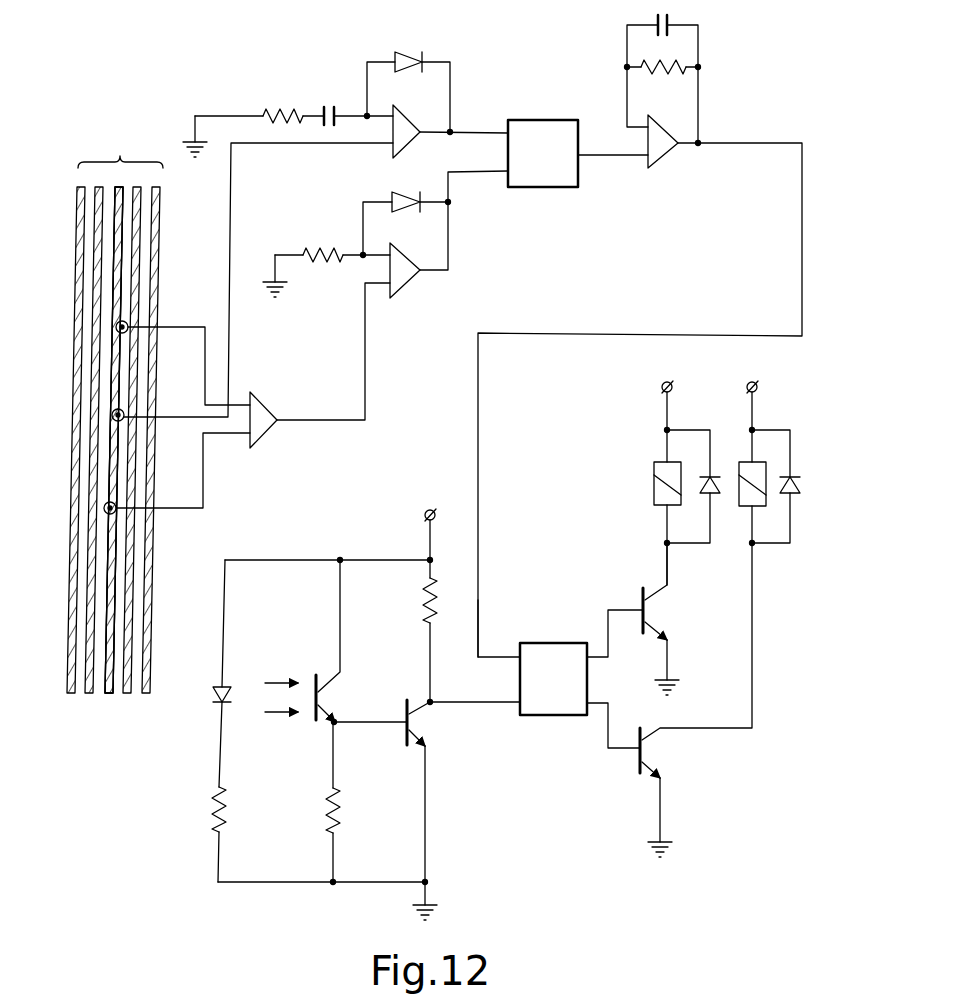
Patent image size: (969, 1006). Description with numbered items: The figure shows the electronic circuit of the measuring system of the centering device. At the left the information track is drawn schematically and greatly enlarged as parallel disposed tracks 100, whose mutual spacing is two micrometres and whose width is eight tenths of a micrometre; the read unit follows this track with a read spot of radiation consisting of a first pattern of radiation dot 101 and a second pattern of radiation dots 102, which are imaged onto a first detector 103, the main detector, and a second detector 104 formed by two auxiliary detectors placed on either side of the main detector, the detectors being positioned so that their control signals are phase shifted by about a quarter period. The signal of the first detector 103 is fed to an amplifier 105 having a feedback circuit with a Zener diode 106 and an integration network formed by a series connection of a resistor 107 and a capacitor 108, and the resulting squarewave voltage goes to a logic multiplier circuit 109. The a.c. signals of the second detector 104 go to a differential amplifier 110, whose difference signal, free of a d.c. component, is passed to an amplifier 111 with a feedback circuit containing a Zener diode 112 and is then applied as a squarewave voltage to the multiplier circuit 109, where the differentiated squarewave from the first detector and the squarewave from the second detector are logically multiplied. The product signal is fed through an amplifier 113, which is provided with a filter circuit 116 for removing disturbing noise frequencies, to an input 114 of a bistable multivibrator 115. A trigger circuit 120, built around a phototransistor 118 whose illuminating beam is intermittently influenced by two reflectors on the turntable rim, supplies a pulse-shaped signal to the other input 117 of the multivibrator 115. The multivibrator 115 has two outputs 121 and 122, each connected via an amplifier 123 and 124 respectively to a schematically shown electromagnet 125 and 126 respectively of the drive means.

The parallel disposed tracks 100 is at (115, 414).
The first pattern of radiation dot 101 is at (124, 388).
The second pattern of radiation dots 102 is at (122, 318).
The first detector 103 is at (124, 412).
The second detector 104 is at (128, 325).
The amplifier 105 is at (408, 138).
The Zener diode 106 is at (403, 62).
The resistor 107 is at (283, 110).
The capacitor 108 is at (329, 105).
The logic multiplier circuit 109 is at (544, 120).
The differential amplifier 110 is at (268, 430).
The amplifier 111 is at (410, 280).
The Zener diode 112 is at (408, 195).
The amplifier 113 is at (668, 150).
The input 114 is at (497, 652).
The bistable multivibrator 115 is at (556, 643).
The filter circuit 116 is at (657, 45).
The other input 117 is at (488, 705).
The phototransistor 118 is at (323, 700).
The trigger circuit 120 is at (290, 804).
The output 121 is at (610, 645).
The output 122 is at (608, 728).
The amplifier 123 is at (655, 610).
The amplifier 124 is at (652, 753).
The electromagnet 125 is at (654, 485).
The electromagnet 126 is at (739, 485).